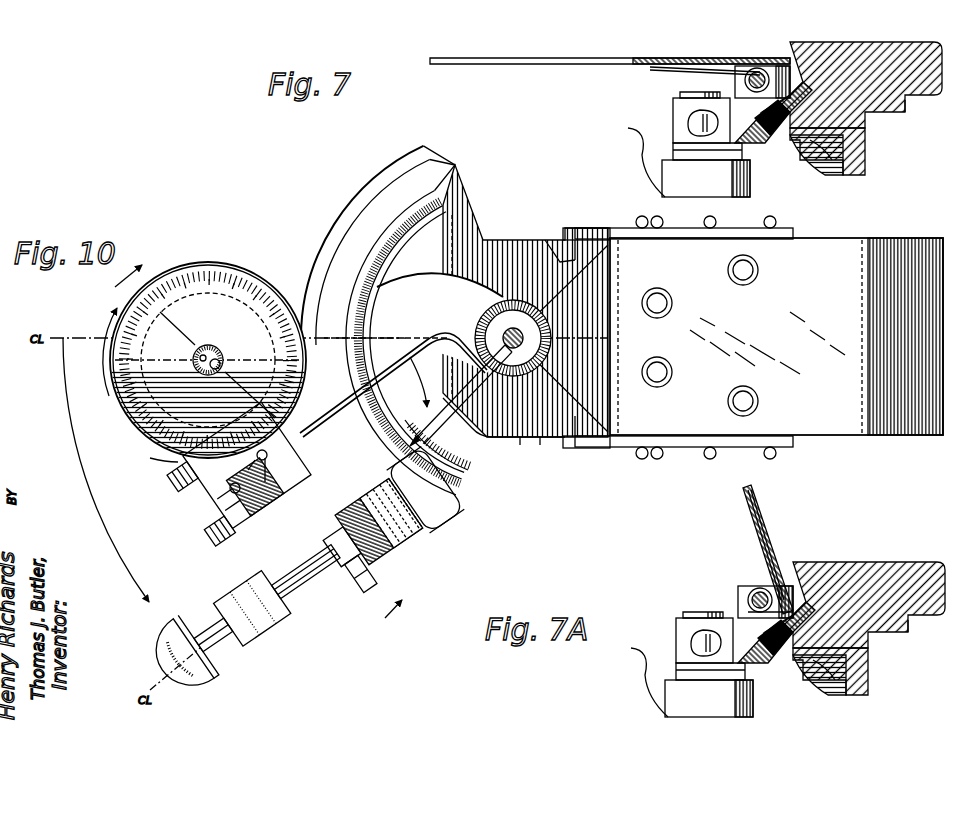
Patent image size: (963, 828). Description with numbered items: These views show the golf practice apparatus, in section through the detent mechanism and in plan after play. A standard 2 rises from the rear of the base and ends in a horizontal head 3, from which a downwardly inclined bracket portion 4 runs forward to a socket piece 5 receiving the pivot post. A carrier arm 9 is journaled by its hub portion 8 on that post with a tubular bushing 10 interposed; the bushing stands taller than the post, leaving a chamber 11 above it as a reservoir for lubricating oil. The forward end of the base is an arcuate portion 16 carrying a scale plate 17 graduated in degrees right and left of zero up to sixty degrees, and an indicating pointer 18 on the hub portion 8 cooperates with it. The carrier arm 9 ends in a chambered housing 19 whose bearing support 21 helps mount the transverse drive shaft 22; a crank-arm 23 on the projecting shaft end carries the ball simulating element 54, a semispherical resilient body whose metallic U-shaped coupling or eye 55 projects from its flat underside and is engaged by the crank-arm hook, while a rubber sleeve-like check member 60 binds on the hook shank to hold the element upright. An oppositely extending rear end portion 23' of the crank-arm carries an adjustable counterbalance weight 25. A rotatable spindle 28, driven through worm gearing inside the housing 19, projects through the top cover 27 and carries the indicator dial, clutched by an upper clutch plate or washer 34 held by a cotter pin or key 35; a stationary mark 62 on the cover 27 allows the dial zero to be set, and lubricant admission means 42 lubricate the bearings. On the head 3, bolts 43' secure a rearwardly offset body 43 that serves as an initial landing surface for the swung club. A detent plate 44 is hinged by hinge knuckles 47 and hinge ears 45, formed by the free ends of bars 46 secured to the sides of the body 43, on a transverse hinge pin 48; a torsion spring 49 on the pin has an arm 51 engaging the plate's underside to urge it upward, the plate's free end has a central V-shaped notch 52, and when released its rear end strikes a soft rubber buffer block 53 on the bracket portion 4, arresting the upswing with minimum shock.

In FIG. 7, the standard 2 is at (862, 160).
In FIG. 7A, the standard 2 is at (842, 671).
In FIG. 7, the horizontal head 3 is at (905, 112).
In FIG. 7A, the horizontal head 3 is at (905, 639).
In FIG. 7, the downwardly inclined bracket portion 4 is at (808, 150).
In FIG. 7A, the downwardly inclined bracket portion 4 is at (815, 679).
In FIG. 7, the socket piece 5 is at (673, 108).
In FIG. 7A, the socket piece 5 is at (689, 640).
In FIG. 10, the socket piece 5 is at (520, 437).
In FIG. 7, the hub portion 8 is at (750, 188).
In FIG. 7A, the hub portion 8 is at (719, 694).
In FIG. 10, the hub portion 8 is at (482, 228).
In FIG. 7, the carrier arm 9 is at (640, 152).
In FIG. 7A, the carrier arm 9 is at (641, 682).
In FIG. 7, the tubular bushing 10 is at (690, 92).
In FIG. 7A, the tubular bushing 10 is at (689, 604).
In FIG. 10, the chamber 11 is at (268, 434).
In FIG. 10, the arcuate portion 16 is at (388, 183).
In FIG. 10, the scale plate 17 is at (352, 236).
In FIG. 10, the indicating pointer 18 is at (470, 445).
In FIG. 10, the chambered housing 19 is at (160, 462).
In FIG. 10, the bearing support 21 is at (218, 262).
In FIG. 10, the drive shaft 22 is at (355, 572).
In FIG. 10, the crank-arm 23 is at (306, 575).
In FIG. 10, the rear end portion of the crank-arm 23' is at (423, 455).
In FIG. 10, the counterbalance weight 25 is at (405, 515).
In FIG. 10, the top cover 27 is at (225, 500).
In FIG. 10, the rotatable spindle 28 is at (214, 350).
In FIG. 10, the upper clutch plate or washer 34 is at (198, 357).
In FIG. 10, the cotter pin or key 35 is at (221, 362).
In FIG. 10, the lubricant admission means 42 is at (182, 488).
In FIG. 7, the offset body 43 is at (852, 72).
In FIG. 7A, the offset body 43 is at (855, 589).
In FIG. 10, the offset body 43 is at (776, 348).
In FIG. 7, the bolts 43' is at (826, 170).
In FIG. 7A, the bolts 43' is at (827, 690).
In FIG. 10, the bolts 43' is at (700, 335).
In FIG. 7, the detent plate 44 is at (614, 57).
In FIG. 7A, the detent plate 44 is at (772, 549).
In FIG. 10, the detent plate 44 is at (545, 252).
In FIG. 7A, the hinge ears 45 is at (747, 591).
In FIG. 10, the hinge ears 45 is at (582, 228).
In FIG. 10, the bars 46 is at (788, 228).
In FIG. 7, the hinge knuckles 47 is at (735, 80).
In FIG. 7A, the hinge knuckles 47 is at (753, 587).
In FIG. 10, the hinge knuckles 47 is at (572, 240).
In FIG. 7, the transverse hinge pin 48 is at (782, 66).
In FIG. 7A, the transverse hinge pin 48 is at (762, 579).
In FIG. 10, the transverse hinge pin 48 is at (540, 437).
In FIG. 7, the torsion spring 49 is at (757, 68).
In FIG. 7A, the torsion spring 49 is at (735, 600).
In FIG. 7, the spring arm 51 is at (700, 68).
In FIG. 7A, the spring arm 51 is at (733, 550).
In FIG. 10, the V-shaped notch 52 is at (524, 340).
In FIG. 7, the shock-absorbing buffer block 53 is at (760, 143).
In FIG. 7A, the shock-absorbing buffer block 53 is at (776, 647).
In FIG. 10, the ball simulating element 54 is at (208, 676).
In FIG. 10, the U-shaped coupling or eye 55 is at (236, 636).
In FIG. 10, the sleeve-like body of check member 60 is at (256, 608).
In FIG. 10, the stationary mark 62 is at (322, 420).